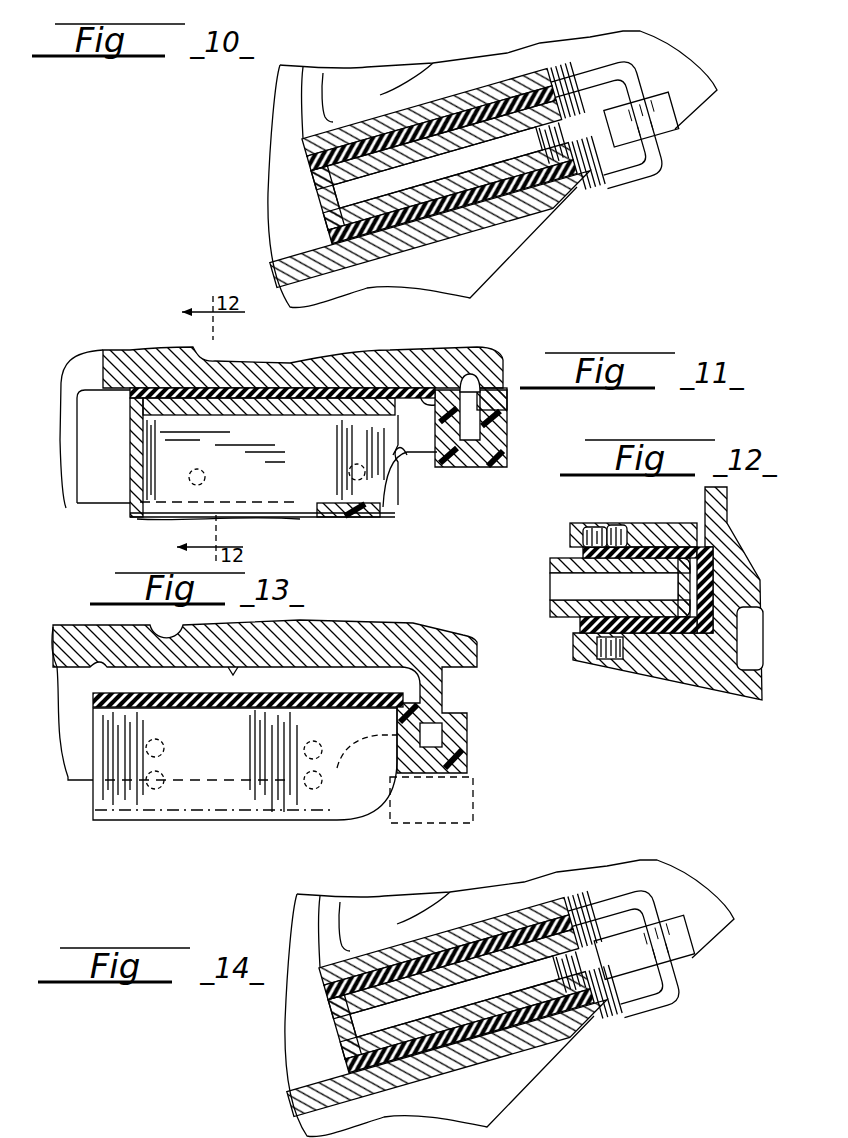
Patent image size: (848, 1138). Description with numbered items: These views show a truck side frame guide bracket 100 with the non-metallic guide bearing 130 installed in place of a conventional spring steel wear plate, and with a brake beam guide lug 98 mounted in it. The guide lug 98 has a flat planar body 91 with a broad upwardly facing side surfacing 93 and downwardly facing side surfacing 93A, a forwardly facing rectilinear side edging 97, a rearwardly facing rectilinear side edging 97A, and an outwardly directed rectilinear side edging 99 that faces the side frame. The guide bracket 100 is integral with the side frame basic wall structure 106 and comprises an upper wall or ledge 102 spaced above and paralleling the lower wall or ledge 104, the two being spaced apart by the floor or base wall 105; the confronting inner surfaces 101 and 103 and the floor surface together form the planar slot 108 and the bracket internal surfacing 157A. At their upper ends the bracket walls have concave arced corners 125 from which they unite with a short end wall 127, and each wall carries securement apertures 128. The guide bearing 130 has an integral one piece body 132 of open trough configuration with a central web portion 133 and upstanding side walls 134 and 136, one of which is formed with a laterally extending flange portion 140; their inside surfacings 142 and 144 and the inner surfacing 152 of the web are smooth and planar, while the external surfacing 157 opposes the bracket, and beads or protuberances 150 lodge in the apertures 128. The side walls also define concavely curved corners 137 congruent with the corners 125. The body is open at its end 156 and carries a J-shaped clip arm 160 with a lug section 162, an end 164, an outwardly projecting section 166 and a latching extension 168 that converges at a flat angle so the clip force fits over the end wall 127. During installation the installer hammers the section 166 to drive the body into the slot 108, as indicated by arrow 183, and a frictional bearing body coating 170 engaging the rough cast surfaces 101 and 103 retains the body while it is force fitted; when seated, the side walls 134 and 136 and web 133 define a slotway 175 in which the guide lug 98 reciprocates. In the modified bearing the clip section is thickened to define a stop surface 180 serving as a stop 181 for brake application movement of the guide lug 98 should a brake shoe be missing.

In FIG. 10, the planar body 91 is at (497, 187).
In FIG. 11, the planar body 91 is at (173, 493).
In FIG. 12, the planar body 91 is at (553, 565).
In FIG. 14, the planar body 91 is at (495, 935).
In FIG. 10, the upwardly facing side surfacing 93 is at (413, 140).
In FIG. 12, the upwardly facing side surfacing 93 is at (553, 563).
In FIG. 10, the downwardly facing side surfacing 93A is at (408, 217).
In FIG. 12, the downwardly facing side surfacing 93A is at (562, 625).
In FIG. 10, the forwardly facing rectilinear side edging 97 is at (560, 160).
In FIG. 11, the forwardly facing rectilinear side edging 97 is at (310, 467).
In FIG. 10, the rearwardly facing rectilinear side edging 97A is at (310, 193).
In FIG. 11, the rearwardly facing rectilinear side edging 97A is at (130, 463).
In FIG. 10, the guide lug 98 is at (312, 205).
In FIG. 11, the guide lug 98 is at (133, 522).
In FIG. 12, the guide lug 98 is at (549, 620).
In FIG. 14, the guide lug 98 is at (347, 1010).
In FIG. 11, the outwardly directed rectilinear side edging 99 is at (140, 350).
In FIG. 12, the outwardly directed rectilinear side edging 99 is at (748, 636).
In FIG. 10, the guide bracket 100 is at (655, 203).
In FIG. 14, the guide bracket 100 is at (617, 843).
In FIG. 10, the inner surface 101 is at (500, 133).
In FIG. 14, the inner surface 101 is at (400, 973).
In FIG. 10, the upper wall or ledge 102 is at (510, 97).
In FIG. 12, the upper wall or ledge 102 is at (592, 530).
In FIG. 14, the upper wall or ledge 102 is at (500, 927).
In FIG. 10, the inner surface 103 is at (367, 230).
In FIG. 11, the inner surface 103 is at (385, 500).
In FIG. 14, the inner surface 103 is at (463, 1037).
In FIG. 10, the lower wall or ledge 104 is at (553, 217).
In FIG. 11, the lower wall or ledge 104 is at (400, 462).
In FIG. 12, the lower wall or ledge 104 is at (663, 633).
In FIG. 14, the lower wall or ledge 104 is at (573, 1030).
In FIG. 11, the floor or base wall 105 is at (400, 393).
In FIG. 12, the floor or base wall 105 is at (713, 557).
In FIG. 13, the floor or base wall 105 is at (233, 673).
In FIG. 11, the side frame basic wall structure 106 is at (367, 385).
In FIG. 12, the side frame basic wall structure 106 is at (725, 567).
In FIG. 10, the planar slot 108 is at (290, 245).
In FIG. 11, the concave arced corner 125 is at (405, 462).
In FIG. 14, the concave arced corner 125 is at (583, 907).
In FIG. 10, the end wall 127 is at (608, 127).
In FIG. 11, the end wall 127 is at (507, 430).
In FIG. 13, the end wall 127 is at (435, 705).
In FIG. 14, the end wall 127 is at (655, 915).
In FIG. 11, the securement aperture 128 is at (203, 468).
In FIG. 12, the securement aperture 128 is at (617, 530).
In FIG. 10, the guide bearing 130 is at (290, 180).
In FIG. 11, the guide bearing 130 is at (329, 382).
In FIG. 13, the guide bearing 130 is at (115, 842).
In FIG. 14, the guide bearing 130 is at (509, 998).
In FIG. 10, the body 132 is at (372, 150).
In FIG. 11, the body 132 is at (480, 360).
In FIG. 13, the body 132 is at (305, 695).
In FIG. 10, the central web portion 133 is at (610, 100).
In FIG. 11, the central web portion 133 is at (250, 388).
In FIG. 12, the central web portion 133 is at (720, 583).
In FIG. 13, the central web portion 133 is at (228, 708).
In FIG. 10, the side wall or flange 134 is at (452, 133).
In FIG. 12, the side wall or flange 134 is at (667, 553).
In FIG. 10, the side wall or flange 136 is at (473, 233).
In FIG. 12, the side wall or flange 136 is at (690, 655).
In FIG. 13, the side wall or flange 136 is at (197, 797).
In FIG. 10, the concavely curved corner 137 is at (563, 170).
In FIG. 11, the concavely curved corner 137 is at (390, 500).
In FIG. 11, the laterally extending flange portion 140 is at (330, 517).
In FIG. 13, the laterally extending flange portion 140 is at (227, 815).
In FIG. 12, the inside surfacing 142 is at (553, 593).
In FIG. 11, the inside surfacing 144 is at (300, 478).
In FIG. 12, the inside surfacing 144 is at (578, 640).
In FIG. 13, the inside surfacing 144 is at (298, 797).
In FIG. 11, the bead or protuberance 150 is at (215, 486).
In FIG. 12, the bead or protuberance 150 is at (583, 552).
In FIG. 11, the inner surfacing 152 is at (207, 398).
In FIG. 12, the inner surfacing 152 is at (707, 547).
In FIG. 11, the open end 156 is at (130, 397).
In FIG. 13, the open end 156 is at (103, 733).
In FIG. 12, the external surfacing 157 is at (677, 575).
In FIG. 13, the external surfacing 157 is at (173, 690).
In FIG. 12, the internal surfacing 157A is at (764, 700).
In FIG. 10, the clip arm 160 is at (690, 133).
In FIG. 11, the clip arm 160 is at (507, 453).
In FIG. 11, the lug section 162 is at (423, 390).
In FIG. 11, the end 164 is at (452, 465).
In FIG. 11, the outwardly projecting section 166 is at (478, 462).
In FIG. 11, the latching extension 168 is at (505, 412).
In FIG. 10, the bearing body coating 170 is at (507, 213).
In FIG. 12, the bearing body coating 170 is at (668, 547).
In FIG. 13, the bearing body coating 170 is at (270, 666).
In FIG. 14, the bearing body coating 170 is at (467, 950).
In FIG. 11, the slotway 175 is at (122, 482).
In FIG. 14, the slotway 175 is at (317, 1042).
In FIG. 14, the stop surface 180 is at (575, 997).
In FIG. 14, the stop 181 is at (585, 962).
In FIG. 13, the arrow 183 is at (433, 825).